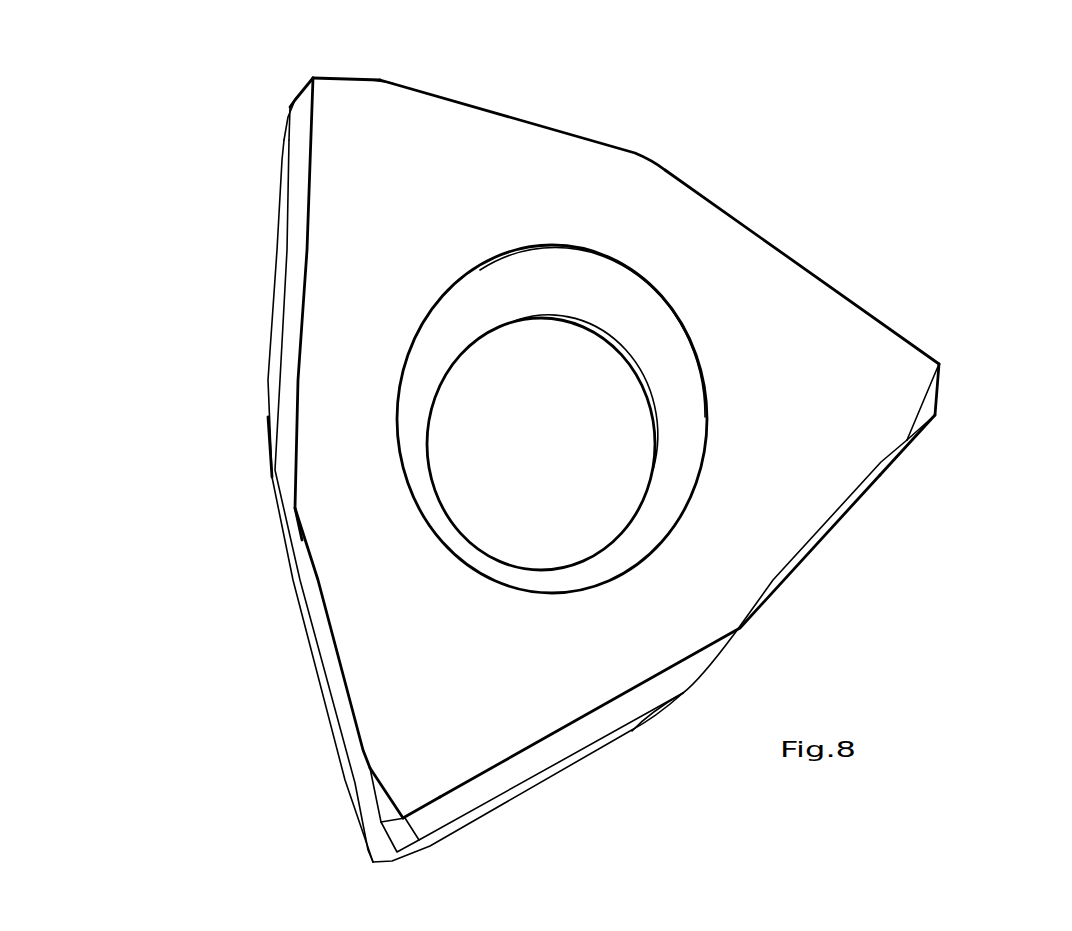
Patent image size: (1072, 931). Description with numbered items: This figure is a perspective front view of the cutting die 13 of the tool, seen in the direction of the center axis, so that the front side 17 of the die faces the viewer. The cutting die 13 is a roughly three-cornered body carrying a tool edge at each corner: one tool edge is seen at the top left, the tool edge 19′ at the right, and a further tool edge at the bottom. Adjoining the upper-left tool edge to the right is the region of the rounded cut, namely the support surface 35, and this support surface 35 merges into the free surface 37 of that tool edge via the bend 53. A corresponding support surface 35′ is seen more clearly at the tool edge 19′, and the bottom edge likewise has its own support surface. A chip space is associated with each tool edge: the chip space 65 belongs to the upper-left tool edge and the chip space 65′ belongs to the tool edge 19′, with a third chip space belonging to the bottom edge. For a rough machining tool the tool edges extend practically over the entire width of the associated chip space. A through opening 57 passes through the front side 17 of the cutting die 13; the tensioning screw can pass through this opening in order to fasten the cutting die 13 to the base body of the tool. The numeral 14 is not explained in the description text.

The cutting die 13 is at (233, 420).
The cutting corner 14 is at (303, 95).
The front side 17 is at (707, 225).
The tool edge 19′ is at (938, 382).
The support surface 35 is at (355, 78).
The support surface 35′ is at (932, 402).
The free surface 37 is at (520, 112).
The bend 53 is at (380, 82).
The through opening 57 is at (522, 427).
The chip space 65 is at (298, 193).
The chip space 65′ is at (912, 441).